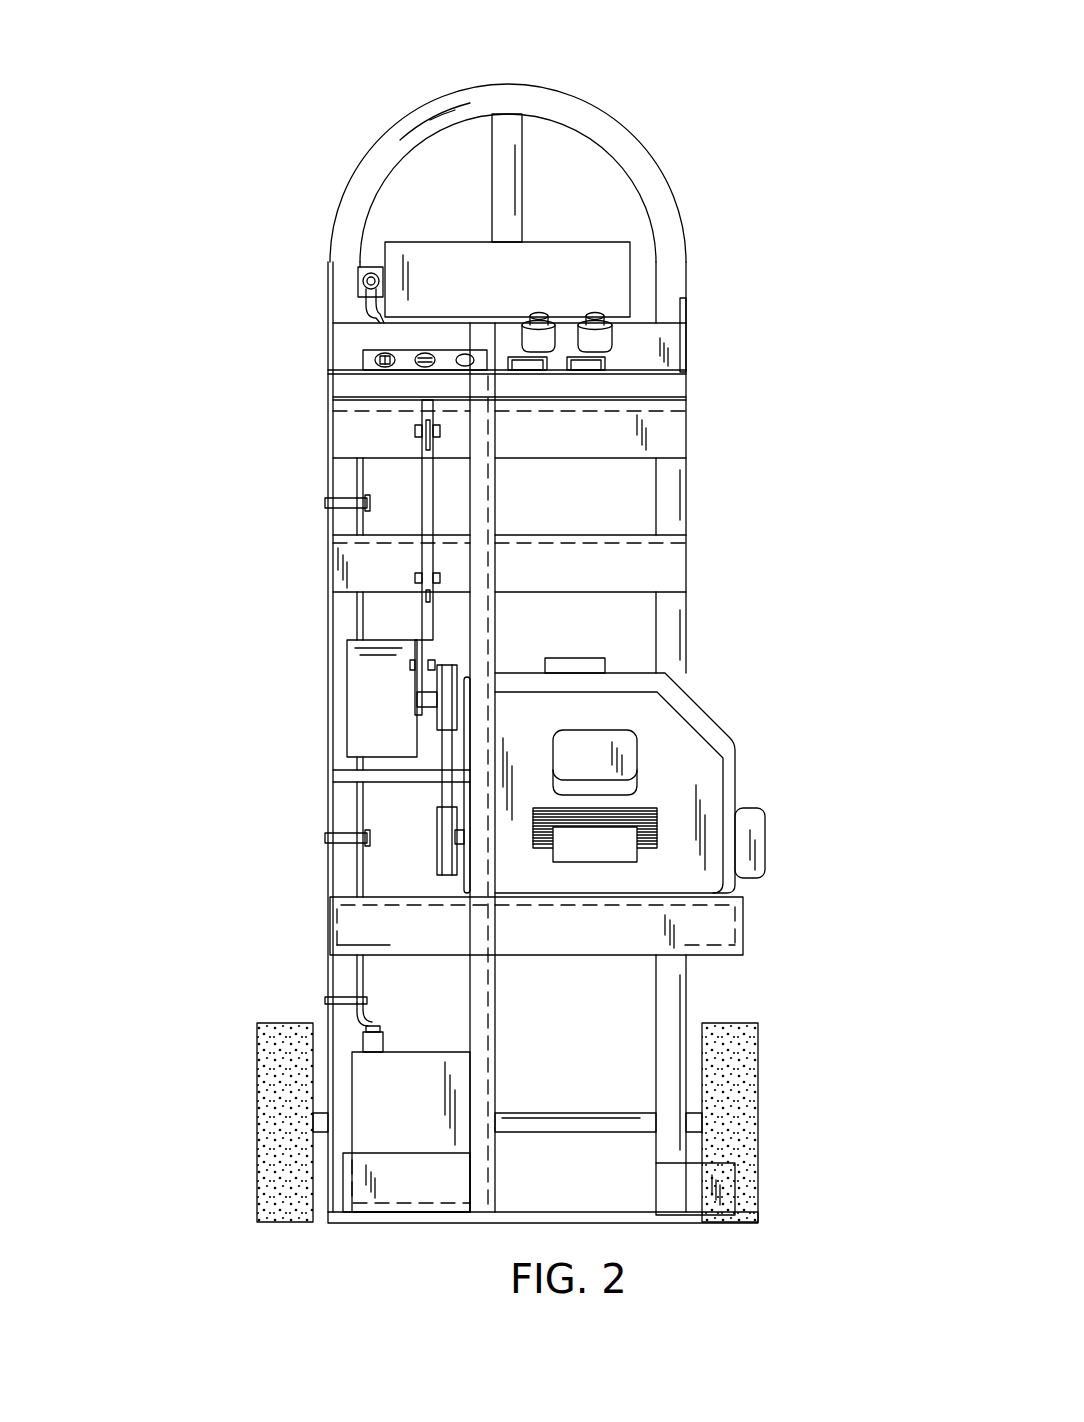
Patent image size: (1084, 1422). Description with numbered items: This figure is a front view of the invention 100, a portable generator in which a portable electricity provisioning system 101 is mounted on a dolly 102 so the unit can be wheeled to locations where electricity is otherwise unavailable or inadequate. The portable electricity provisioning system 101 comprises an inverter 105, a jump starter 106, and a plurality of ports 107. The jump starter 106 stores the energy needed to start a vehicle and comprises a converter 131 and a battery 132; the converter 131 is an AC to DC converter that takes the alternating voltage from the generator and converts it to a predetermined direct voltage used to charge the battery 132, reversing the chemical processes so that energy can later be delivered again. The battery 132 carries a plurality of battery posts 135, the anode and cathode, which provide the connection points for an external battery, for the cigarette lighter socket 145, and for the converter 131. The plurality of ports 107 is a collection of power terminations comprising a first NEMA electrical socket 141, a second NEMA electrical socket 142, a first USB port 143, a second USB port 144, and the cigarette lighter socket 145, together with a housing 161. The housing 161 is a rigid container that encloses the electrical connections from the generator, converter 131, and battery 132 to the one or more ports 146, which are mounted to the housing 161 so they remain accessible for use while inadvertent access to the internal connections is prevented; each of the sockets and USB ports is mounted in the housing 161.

The invention 100 is at (216, 94).
The portable electricity provisioning system 101 is at (632, 278).
The dolly 102 is at (672, 192).
The inverter 105 is at (670, 775).
The jump starter 106 is at (544, 193).
The plurality of ports 107 is at (363, 352).
The converter 131 is at (430, 252).
The battery 132 is at (402, 1115).
The plurality of battery posts 135 is at (360, 1040).
The first NEMA 5-15 electrical socket 141 is at (515, 355).
The second NEMA 5-15 electrical socket 142 is at (568, 355).
The first USB port 143 is at (418, 352).
The second USB port 144 is at (380, 352).
The cigarette lighter socket 145 is at (607, 347).
The one or more ports 146 is at (750, 356).
The housing 161 is at (657, 362).